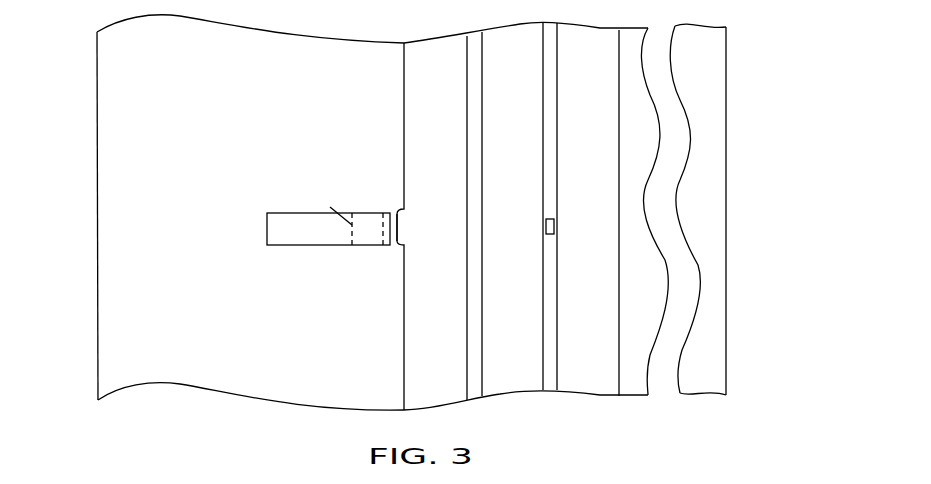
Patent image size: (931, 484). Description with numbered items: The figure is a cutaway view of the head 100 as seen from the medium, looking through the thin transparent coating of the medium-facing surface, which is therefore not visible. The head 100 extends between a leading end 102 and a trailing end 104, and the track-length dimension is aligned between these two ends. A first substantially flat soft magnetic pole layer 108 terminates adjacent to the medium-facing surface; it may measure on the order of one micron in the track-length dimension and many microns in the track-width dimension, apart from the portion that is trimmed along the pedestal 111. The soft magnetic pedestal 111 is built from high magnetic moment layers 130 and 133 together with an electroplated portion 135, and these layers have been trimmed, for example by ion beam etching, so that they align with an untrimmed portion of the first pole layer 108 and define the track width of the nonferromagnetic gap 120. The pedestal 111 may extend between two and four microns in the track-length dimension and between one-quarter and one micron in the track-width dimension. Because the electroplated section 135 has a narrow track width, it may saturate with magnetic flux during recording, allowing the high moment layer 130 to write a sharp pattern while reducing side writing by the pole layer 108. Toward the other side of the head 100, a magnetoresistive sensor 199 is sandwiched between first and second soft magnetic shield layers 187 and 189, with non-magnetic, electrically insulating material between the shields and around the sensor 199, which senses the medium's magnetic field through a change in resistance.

The head 100 is at (130, 415).
The leading end 102 is at (726, 302).
The trailing end 104 is at (97, 215).
The first pole layer 108 is at (404, 117).
The pedestal 111 is at (352, 246).
The nonferromagnetic gap 120 is at (393, 248).
The high magnetic moment layer 130 is at (383, 213).
The high magnetic moment layer 133 is at (334, 210).
The electroplated portion 135 is at (300, 246).
The first soft magnetic shield layer 187 is at (618, 202).
The second soft magnetic shield layer 189 is at (480, 72).
The magnetoresistive sensor 199 is at (546, 227).